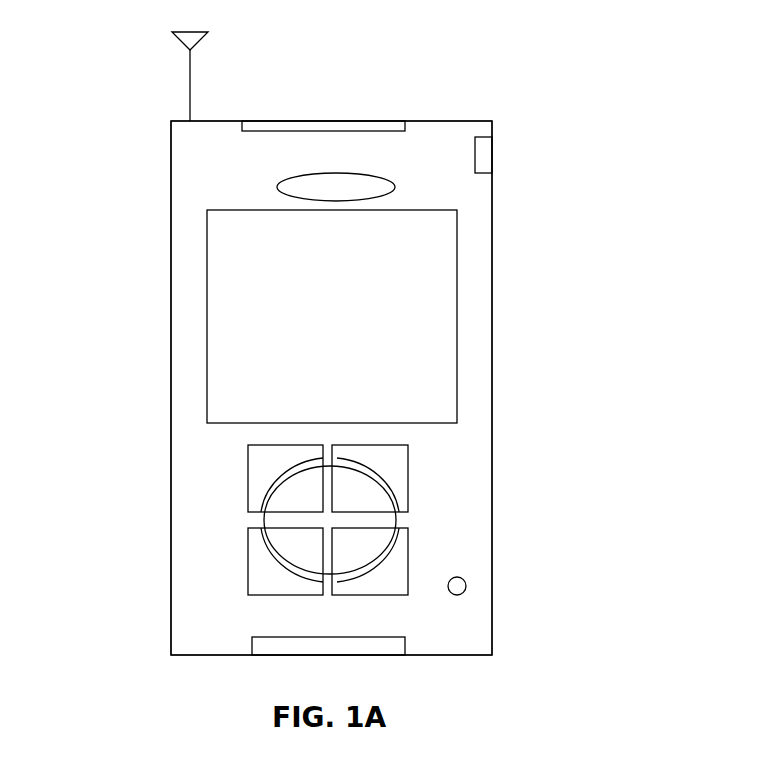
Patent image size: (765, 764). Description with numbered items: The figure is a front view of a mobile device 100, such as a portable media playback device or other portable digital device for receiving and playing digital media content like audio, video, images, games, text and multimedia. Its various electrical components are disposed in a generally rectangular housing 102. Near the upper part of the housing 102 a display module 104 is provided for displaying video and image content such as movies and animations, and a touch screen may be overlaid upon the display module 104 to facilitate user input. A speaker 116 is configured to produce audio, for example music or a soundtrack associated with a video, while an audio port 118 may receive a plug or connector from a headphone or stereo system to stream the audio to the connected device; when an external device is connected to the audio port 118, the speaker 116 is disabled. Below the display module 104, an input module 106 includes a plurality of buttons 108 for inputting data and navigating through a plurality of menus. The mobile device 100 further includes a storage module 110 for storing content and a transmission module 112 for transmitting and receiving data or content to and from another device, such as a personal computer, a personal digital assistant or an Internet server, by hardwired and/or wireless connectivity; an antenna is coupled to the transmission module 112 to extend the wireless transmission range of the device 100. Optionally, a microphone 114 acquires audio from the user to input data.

The mobile device 100 is at (583, 212).
The housing 102 is at (171, 155).
The display module 104 is at (458, 291).
The input module 106 is at (422, 528).
The buttons 108 is at (262, 573).
The storage module 110 is at (252, 641).
The transmission module 112 is at (357, 121).
The microphone 114 is at (465, 580).
The speaker 116 is at (340, 175).
The audio port 118 is at (492, 155).